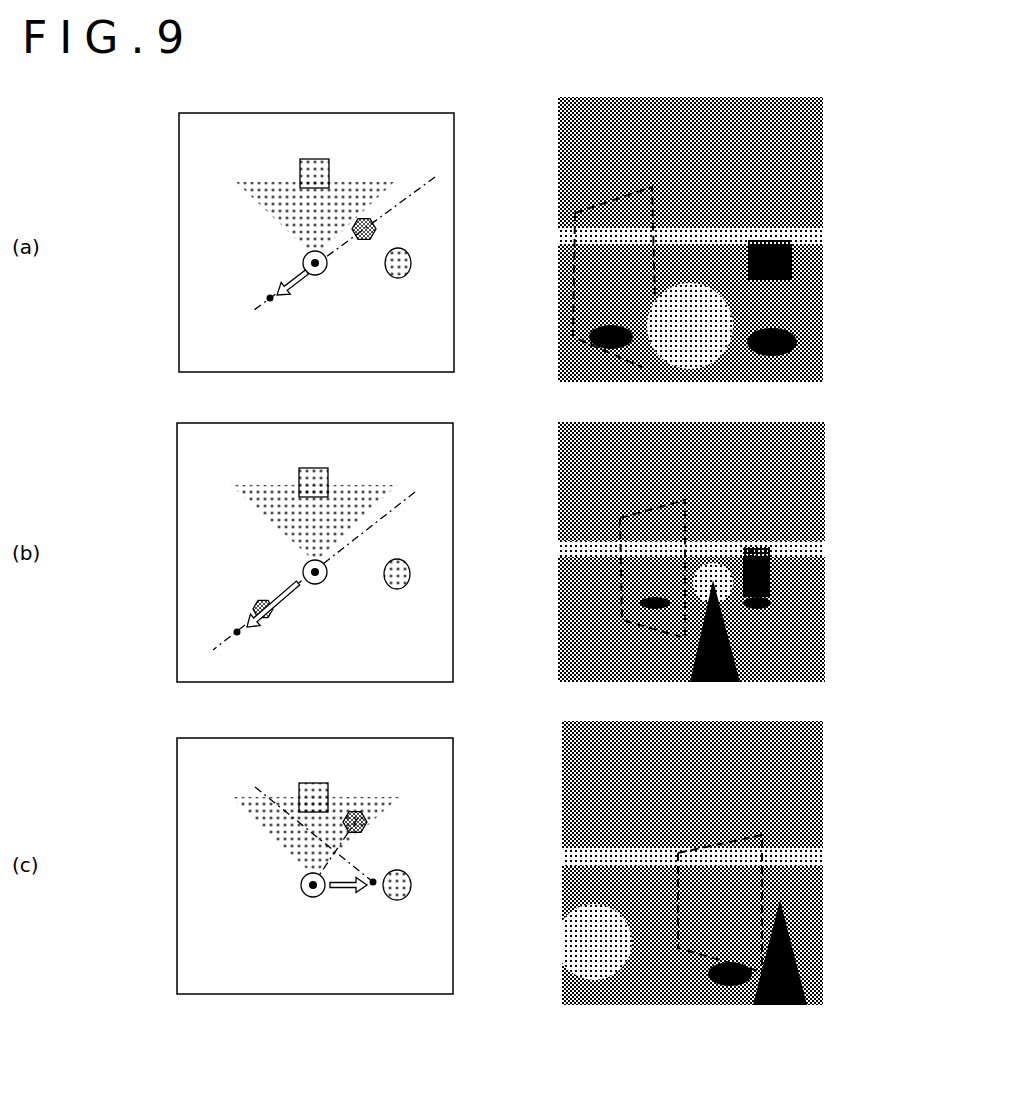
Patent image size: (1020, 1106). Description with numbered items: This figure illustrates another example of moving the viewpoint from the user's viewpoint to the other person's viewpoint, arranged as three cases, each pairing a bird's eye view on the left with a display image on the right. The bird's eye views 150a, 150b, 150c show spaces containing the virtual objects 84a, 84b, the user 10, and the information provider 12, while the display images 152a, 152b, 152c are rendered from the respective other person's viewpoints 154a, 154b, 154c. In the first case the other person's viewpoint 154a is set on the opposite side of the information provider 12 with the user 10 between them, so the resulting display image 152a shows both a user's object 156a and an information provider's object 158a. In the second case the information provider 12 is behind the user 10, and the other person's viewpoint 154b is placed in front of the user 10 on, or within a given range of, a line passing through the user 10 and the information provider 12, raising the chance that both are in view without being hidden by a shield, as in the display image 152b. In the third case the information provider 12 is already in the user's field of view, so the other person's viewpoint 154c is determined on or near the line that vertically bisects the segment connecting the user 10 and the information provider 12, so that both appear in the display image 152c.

The user 10 is at (303, 258).
The information provider 12 is at (375, 227).
The virtual object 84a is at (305, 159).
The virtual object 84b is at (413, 262).
The bird's eye view 150a is at (386, 113).
The bird's eye view 150b is at (390, 423).
The bird's eye view 150c is at (385, 737).
The display image 152a is at (747, 236).
The display image 152b is at (820, 458).
The display image 152c is at (822, 753).
The other person's viewpoint 154a is at (268, 298).
The other person's viewpoint 154b is at (235, 632).
The other person's viewpoint 154c is at (375, 887).
The user's object 156a is at (733, 352).
The information provider's object 158a is at (707, 280).